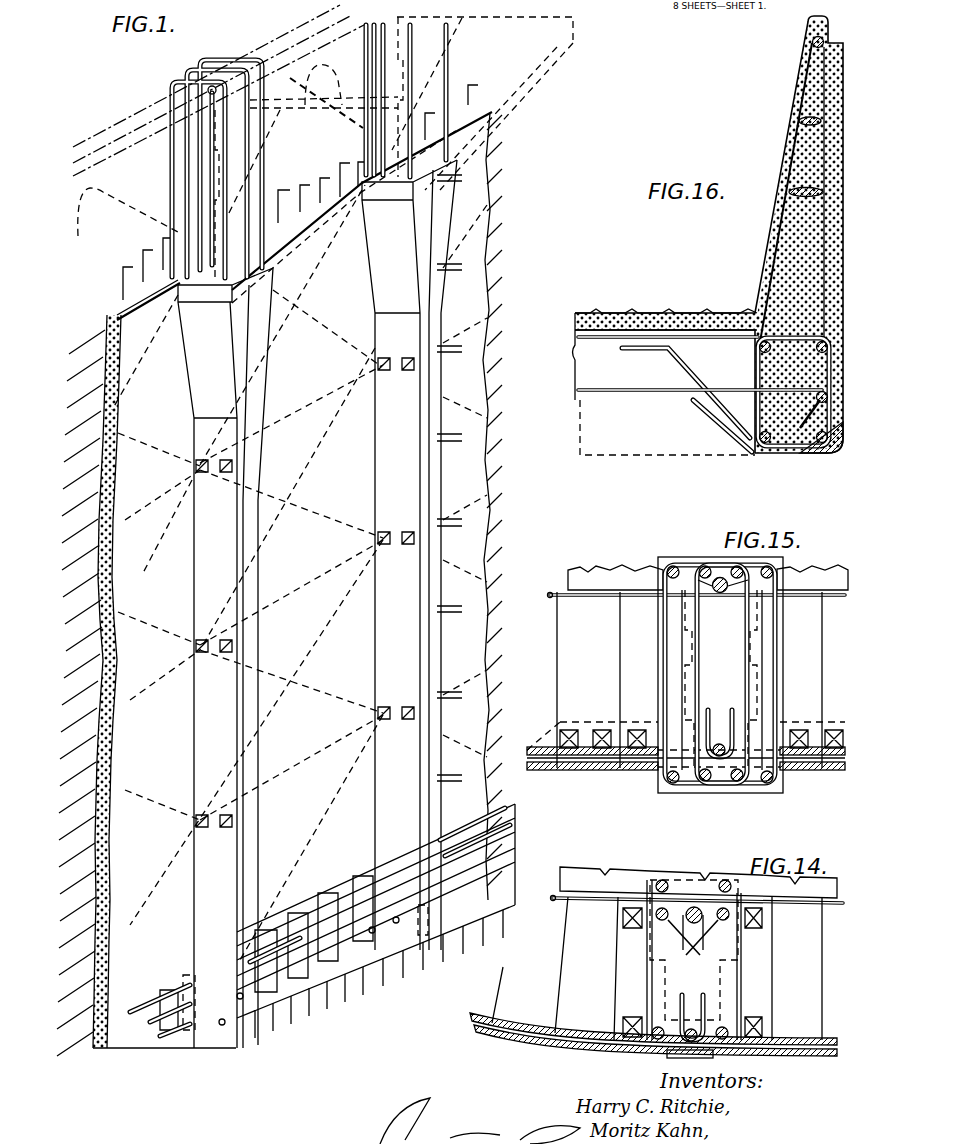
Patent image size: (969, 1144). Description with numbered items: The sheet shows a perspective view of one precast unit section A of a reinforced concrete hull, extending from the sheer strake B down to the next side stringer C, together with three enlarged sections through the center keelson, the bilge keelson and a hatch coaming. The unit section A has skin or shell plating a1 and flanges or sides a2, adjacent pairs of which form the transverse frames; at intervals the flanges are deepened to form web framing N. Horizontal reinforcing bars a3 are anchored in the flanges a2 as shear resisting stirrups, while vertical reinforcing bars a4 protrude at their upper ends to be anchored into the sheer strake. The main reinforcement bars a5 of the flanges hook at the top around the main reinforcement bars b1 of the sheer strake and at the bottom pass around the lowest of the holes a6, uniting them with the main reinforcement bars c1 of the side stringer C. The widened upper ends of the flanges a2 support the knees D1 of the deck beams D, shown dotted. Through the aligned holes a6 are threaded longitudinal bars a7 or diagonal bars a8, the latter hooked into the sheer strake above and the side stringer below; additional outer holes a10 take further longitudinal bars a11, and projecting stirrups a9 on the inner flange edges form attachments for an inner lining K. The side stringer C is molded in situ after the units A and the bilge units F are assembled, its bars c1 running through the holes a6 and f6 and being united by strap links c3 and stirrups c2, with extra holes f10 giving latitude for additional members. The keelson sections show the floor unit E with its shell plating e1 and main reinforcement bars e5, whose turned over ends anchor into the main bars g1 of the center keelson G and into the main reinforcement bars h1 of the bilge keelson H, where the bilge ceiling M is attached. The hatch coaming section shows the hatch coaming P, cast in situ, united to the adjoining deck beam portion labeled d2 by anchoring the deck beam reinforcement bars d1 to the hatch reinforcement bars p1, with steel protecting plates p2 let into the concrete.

In FIG. 1, the skin or shell plating a1 is at (470, 362).
In FIG. 1, the flanges or sides a2 is at (258, 477).
In FIG. 1, the horizontal reinforcing bars a3 is at (496, 206).
In FIG. 1, the vertical reinforcing bars a4 is at (323, 186).
In FIG. 1, the main reinforcement bars of the flanges a5 is at (380, 50).
In FIG. 1, the holes a6 is at (378, 364).
In FIG. 1, the longitudinal bars a7 is at (504, 482).
In FIG. 1, the diagonal bars a8 is at (284, 318).
In FIG. 1, the projecting stirrups a9 is at (460, 180).
In FIG. 1, the additional outer holes a10 is at (406, 372).
In FIG. 1, the additional longitudinal bars a11 is at (502, 300).
In FIG. 1, the unit section A is at (294, 570).
In FIG. 1, the sheer strake B is at (214, 153).
In FIG. 1, the side stringer C is at (320, 942).
In FIG. 1, the deck beams D is at (586, 32).
In FIG. 16, the deck beams D is at (640, 372).
In FIG. 1, the knees of the deck beams D1 is at (92, 160).
In FIG. 1, the main reinforcement bars of the sheer strake b1 is at (272, 42).
In FIG. 1, the main reinforcement bars of the side stringer c1 is at (486, 827).
In FIG. 1, the stirrups c2 is at (347, 894).
In FIG. 1, the strap links c3 is at (213, 982).
In FIG. 1, the holes of the bilge units f6 is at (287, 989).
In FIG. 1, the extra holes of the bilge units f10 is at (320, 967).
In FIG. 16, the hatch coamings P is at (805, 153).
In FIG. 16, the reinforcement bars of the hatches p1 is at (824, 44).
In FIG. 16, the protecting plates p2 is at (836, 452).
In FIG. 16, the reinforcement bars of the deck beams d1 is at (700, 350).
In FIG. 16, the slab d2 is at (638, 314).
In FIG. 16, the web framing N is at (640, 456).
In FIG. 15, the bilge ceiling M is at (595, 570).
In FIG. 14, the bilge ceiling M is at (800, 898).
In FIG. 15, the unit E is at (686, 707).
In FIG. 14, the unit E is at (710, 972).
In FIG. 15, the center keelson G is at (724, 654).
In FIG. 15, the main bars of the center keelson g1 is at (702, 566).
In FIG. 15, the shell plating or skin e1 is at (582, 768).
In FIG. 14, the shell plating or skin e1 is at (808, 1050).
In FIG. 15, the main reinforcement bars e5 is at (590, 598).
In FIG. 14, the main reinforcement bars e5 is at (830, 904).
In FIG. 14, the inner lining K is at (608, 888).
In FIG. 14, the bilge units F is at (582, 956).
In FIG. 14, the bilge keelson H is at (688, 970).
In FIG. 14, the main reinforcement bars of the bilge keelson h1 is at (668, 908).